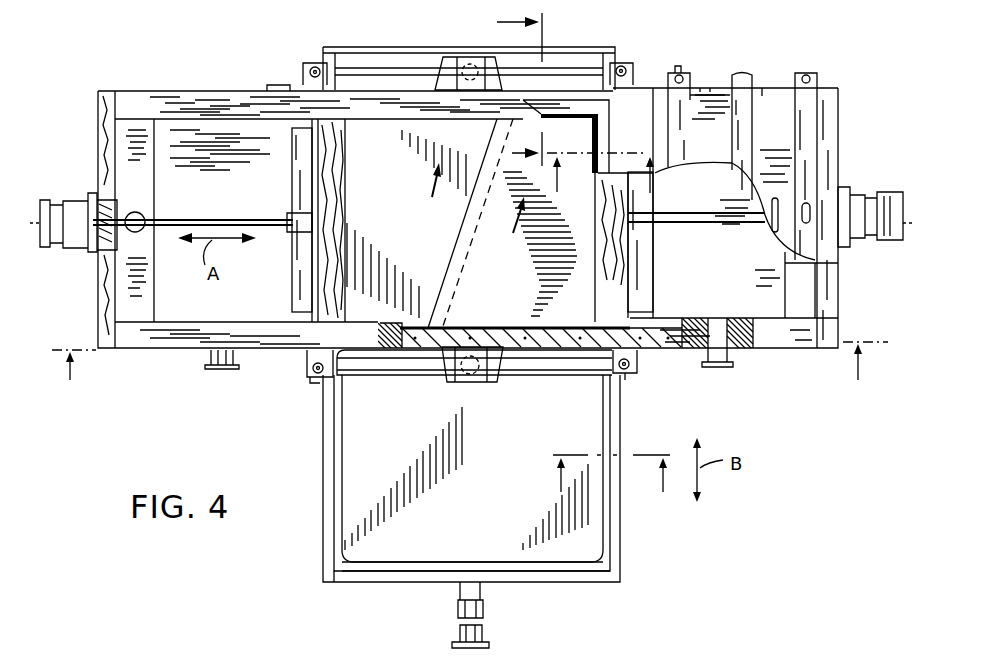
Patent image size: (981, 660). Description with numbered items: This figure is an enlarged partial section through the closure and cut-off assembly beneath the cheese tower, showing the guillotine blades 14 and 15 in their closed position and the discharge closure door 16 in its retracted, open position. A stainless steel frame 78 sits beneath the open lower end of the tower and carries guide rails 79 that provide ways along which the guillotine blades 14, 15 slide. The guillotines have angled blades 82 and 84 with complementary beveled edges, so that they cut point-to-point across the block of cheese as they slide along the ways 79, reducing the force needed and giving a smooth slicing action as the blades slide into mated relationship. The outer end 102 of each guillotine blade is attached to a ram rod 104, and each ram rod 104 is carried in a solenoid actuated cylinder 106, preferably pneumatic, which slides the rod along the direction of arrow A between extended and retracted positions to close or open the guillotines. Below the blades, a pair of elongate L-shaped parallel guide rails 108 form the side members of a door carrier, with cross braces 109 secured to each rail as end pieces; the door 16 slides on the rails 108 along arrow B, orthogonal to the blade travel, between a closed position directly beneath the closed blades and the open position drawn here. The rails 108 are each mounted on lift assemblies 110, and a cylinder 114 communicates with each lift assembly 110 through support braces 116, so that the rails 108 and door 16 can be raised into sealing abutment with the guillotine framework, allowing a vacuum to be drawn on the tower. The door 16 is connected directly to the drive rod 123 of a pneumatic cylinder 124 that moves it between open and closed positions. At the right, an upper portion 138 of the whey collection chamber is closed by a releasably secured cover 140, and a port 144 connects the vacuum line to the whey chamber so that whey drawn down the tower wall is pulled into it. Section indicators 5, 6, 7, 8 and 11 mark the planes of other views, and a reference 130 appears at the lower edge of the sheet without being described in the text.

The guillotine blade 14 is at (372, 128).
The guillotine blade 15 is at (560, 123).
The closure discharge door 16 is at (597, 514).
The stainless steel frame 78 is at (147, 90).
The guide rails 79 is at (670, 342).
The angled blade 82 is at (466, 277).
The angled blade 84 is at (450, 265).
The outer end of guillotine blade 102 is at (310, 236).
The ram rod 104 is at (192, 220).
The solenoid actuated cylinder 106 is at (47, 199).
The L-shaped guide rails 108 is at (323, 530).
The cross braces 109 is at (358, 65).
The lift assemblies 110 is at (311, 63).
The cylinder 114 is at (468, 58).
The support braces 116 is at (553, 47).
The drive rod 123 is at (458, 607).
The cylinder 124 is at (480, 650).
The element 130 is at (737, 657).
The upper portion of whey collection chamber 138 is at (767, 310).
The cover 140 is at (768, 100).
The port 144 is at (223, 372).
The section line 5- 5 is at (470, 350).
The section line 6- 6 is at (611, 461).
The view arrow 7 is at (471, 209).
The section line 8- 8 is at (526, 89).
The section line 11- 11 is at (600, 161).